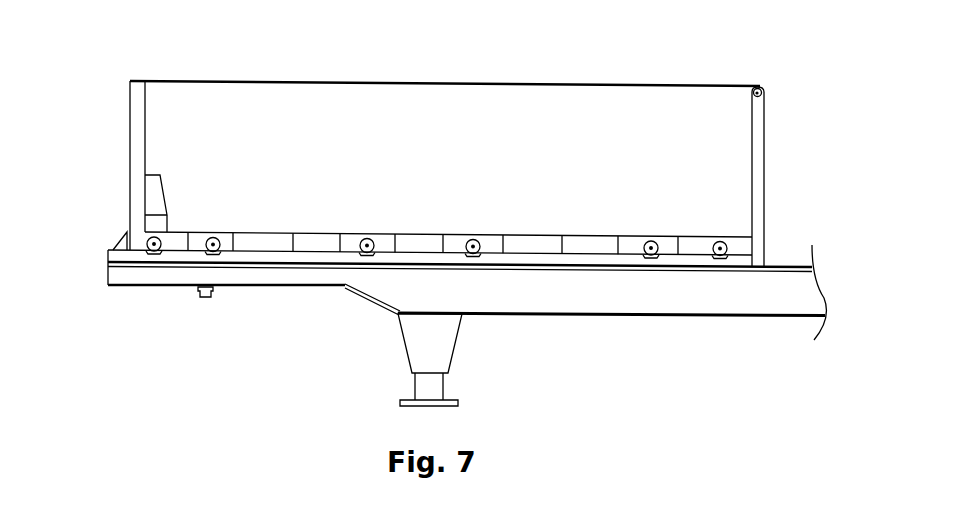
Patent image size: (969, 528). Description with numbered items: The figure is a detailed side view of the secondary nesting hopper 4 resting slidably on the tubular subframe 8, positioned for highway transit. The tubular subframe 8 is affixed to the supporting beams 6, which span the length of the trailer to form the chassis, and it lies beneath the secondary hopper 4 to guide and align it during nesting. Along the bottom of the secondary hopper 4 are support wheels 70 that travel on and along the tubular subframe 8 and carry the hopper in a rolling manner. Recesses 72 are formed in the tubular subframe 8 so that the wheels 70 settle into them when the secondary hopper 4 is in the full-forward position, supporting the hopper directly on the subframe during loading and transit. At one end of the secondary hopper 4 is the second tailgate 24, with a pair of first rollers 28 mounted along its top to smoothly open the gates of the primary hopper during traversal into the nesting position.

The secondary nesting hopper 4 is at (282, 79).
The supporting beams 6 is at (734, 318).
The tubular subframe 8 is at (107, 252).
The second tailgate 24 is at (765, 159).
The first rollers 28 is at (766, 88).
The support wheels 70 is at (371, 236).
The recesses 72 is at (223, 257).